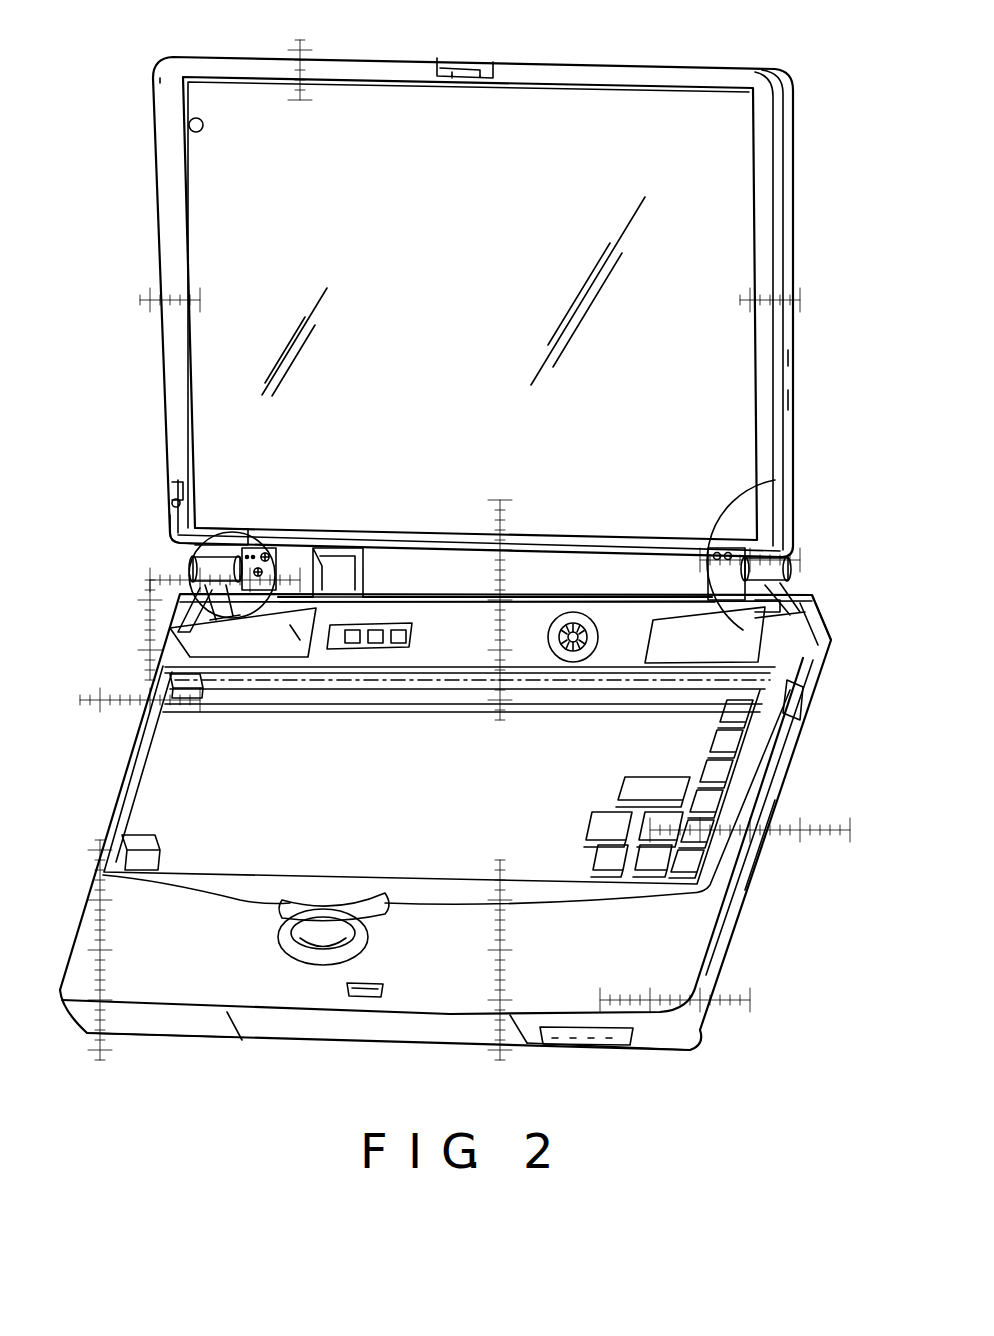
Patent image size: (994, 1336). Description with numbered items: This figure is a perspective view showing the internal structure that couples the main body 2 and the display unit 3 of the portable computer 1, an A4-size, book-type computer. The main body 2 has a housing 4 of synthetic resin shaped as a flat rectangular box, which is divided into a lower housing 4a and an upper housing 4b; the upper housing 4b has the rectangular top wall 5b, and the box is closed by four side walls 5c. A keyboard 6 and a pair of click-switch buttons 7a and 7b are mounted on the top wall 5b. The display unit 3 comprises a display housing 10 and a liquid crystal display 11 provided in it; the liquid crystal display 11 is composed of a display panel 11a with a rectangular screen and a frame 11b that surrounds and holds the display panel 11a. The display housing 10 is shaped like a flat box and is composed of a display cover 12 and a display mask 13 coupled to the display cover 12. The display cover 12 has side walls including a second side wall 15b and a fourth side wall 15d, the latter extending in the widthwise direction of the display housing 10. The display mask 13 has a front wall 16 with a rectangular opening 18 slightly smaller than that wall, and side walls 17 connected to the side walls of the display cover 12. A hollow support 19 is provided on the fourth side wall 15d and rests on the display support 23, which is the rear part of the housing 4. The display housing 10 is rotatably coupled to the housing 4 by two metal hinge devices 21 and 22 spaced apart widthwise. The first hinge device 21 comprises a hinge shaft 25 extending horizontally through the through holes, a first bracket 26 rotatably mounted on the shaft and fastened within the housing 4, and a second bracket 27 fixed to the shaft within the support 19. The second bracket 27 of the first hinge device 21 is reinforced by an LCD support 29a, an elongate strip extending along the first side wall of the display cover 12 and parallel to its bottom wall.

The portable computer 1 is at (822, 515).
The main body 2 is at (122, 772).
The display unit 3 is at (150, 186).
The housing 4 is at (822, 838).
The lower housing 4a is at (750, 858).
The upper housing 4b is at (708, 905).
The top wall 5b is at (640, 975).
The side walls 5c is at (190, 1035).
The keyboard 6 is at (655, 795).
The click-switch button 7a is at (385, 895).
The click-switch button 7b is at (325, 945).
The display housing 10 is at (797, 222).
The liquid crystal display 11 is at (230, 285).
The display panel 11a is at (215, 512).
The frame 11b is at (175, 543).
The display cover 12 is at (797, 277).
The display mask 13 is at (772, 320).
The second side wall 15b is at (797, 402).
The fourth side wall 15d is at (236, 545).
The front wall 16 is at (168, 356).
The side walls 17 is at (790, 358).
The rectangular opening 18 is at (188, 125).
The hollow support 19 is at (493, 578).
The first hinge device 21 is at (205, 612).
The second hinge device 22 is at (775, 572).
The display support 23 is at (303, 593).
The hinge shaft 25 is at (200, 570).
The first bracket 26 is at (212, 592).
The second bracket 27 is at (258, 555).
The LCD support 29a is at (173, 516).